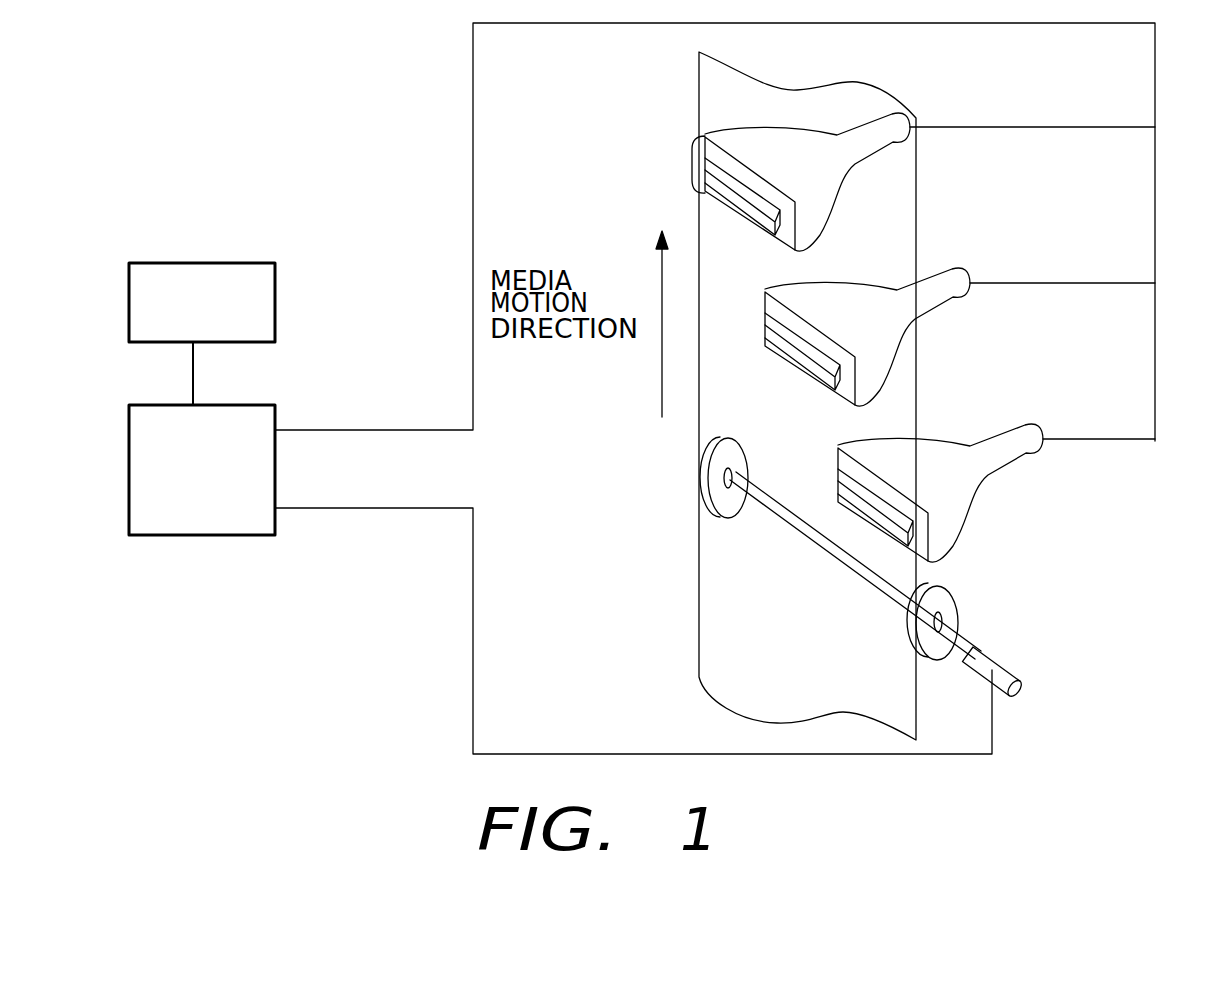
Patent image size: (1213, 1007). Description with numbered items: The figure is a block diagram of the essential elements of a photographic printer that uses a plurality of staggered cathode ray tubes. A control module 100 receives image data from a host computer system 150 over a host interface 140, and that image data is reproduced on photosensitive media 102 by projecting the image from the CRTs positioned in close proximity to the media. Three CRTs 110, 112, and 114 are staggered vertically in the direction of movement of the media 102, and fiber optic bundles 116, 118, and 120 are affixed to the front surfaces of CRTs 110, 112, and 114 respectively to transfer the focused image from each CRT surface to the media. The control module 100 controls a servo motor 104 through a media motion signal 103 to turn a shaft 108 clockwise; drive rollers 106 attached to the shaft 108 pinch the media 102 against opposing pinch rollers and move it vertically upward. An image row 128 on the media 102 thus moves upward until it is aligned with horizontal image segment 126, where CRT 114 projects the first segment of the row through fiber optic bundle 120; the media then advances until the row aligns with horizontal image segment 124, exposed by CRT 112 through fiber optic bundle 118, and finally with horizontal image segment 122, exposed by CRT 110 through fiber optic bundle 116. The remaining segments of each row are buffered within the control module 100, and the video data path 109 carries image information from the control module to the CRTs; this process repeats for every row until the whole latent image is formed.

The control module 100 is at (271, 406).
The photosensitive media 102 is at (699, 596).
The media motion signal 103 is at (474, 661).
The servo motor 104 is at (1036, 670).
The drive rollers 106 is at (731, 520).
The shaft 108 is at (808, 532).
The video data line 109 is at (474, 156).
The cathode ray tube 110 is at (785, 130).
The cathode ray tube 112 is at (850, 284).
The cathode ray tube 114 is at (935, 438).
The fiber optic bundle 116 is at (794, 210).
The fiber optic bundle 118 is at (880, 347).
The fiber optic bundle 120 is at (946, 510).
The horizontal image segment 122 is at (762, 218).
The horizontal image segment 124 is at (828, 367).
The horizontal image segment 126 is at (899, 466).
The image row 128 is at (765, 460).
The host interface 140 is at (194, 386).
The host computer system 150 is at (219, 264).